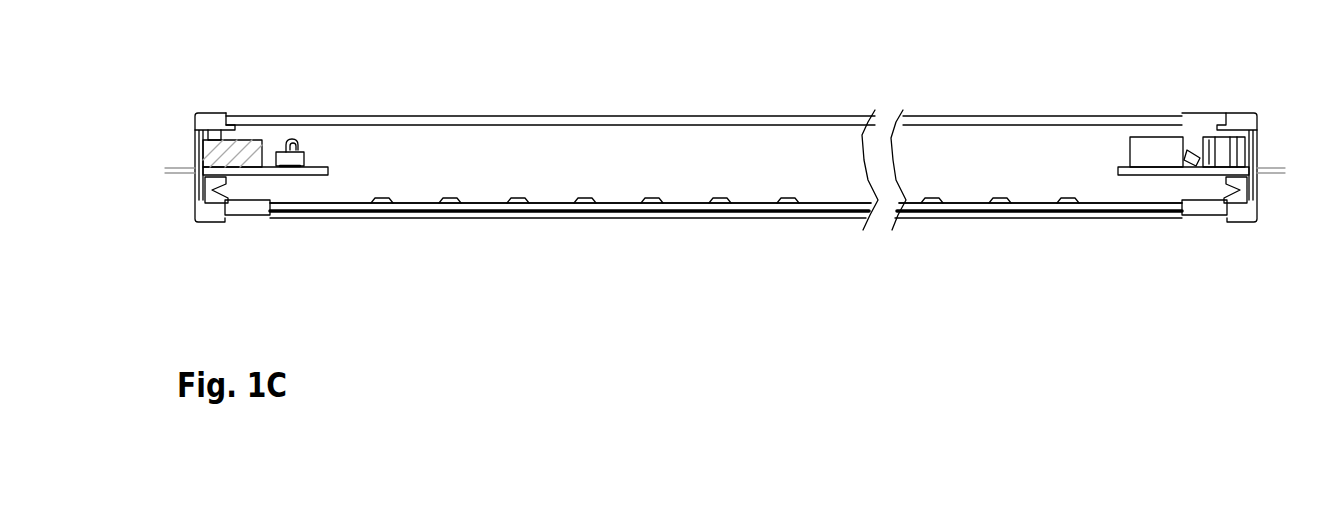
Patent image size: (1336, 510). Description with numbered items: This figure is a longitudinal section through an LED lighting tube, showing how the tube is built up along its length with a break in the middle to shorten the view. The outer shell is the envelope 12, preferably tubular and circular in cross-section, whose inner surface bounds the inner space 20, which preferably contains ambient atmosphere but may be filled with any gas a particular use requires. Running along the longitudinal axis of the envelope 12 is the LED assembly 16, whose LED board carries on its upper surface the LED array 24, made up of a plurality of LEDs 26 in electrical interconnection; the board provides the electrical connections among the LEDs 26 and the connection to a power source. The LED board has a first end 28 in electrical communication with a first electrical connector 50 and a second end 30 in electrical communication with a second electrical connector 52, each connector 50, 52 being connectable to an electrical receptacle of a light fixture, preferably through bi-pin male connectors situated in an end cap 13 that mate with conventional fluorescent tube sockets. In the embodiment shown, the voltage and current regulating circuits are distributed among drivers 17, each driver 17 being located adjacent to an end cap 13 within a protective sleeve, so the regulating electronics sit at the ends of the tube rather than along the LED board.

The envelope 12 is at (603, 122).
The end cap 13 is at (203, 120).
The LED assembly 16 is at (334, 199).
The driver 17 is at (257, 167).
The inner space 20 is at (1028, 162).
The LED array 24 is at (638, 185).
The LED 26 is at (786, 195).
The first end 28 is at (257, 205).
The second end 30 is at (1192, 205).
The first electrical connector 50 is at (228, 195).
The second electrical connector 52 is at (1223, 190).